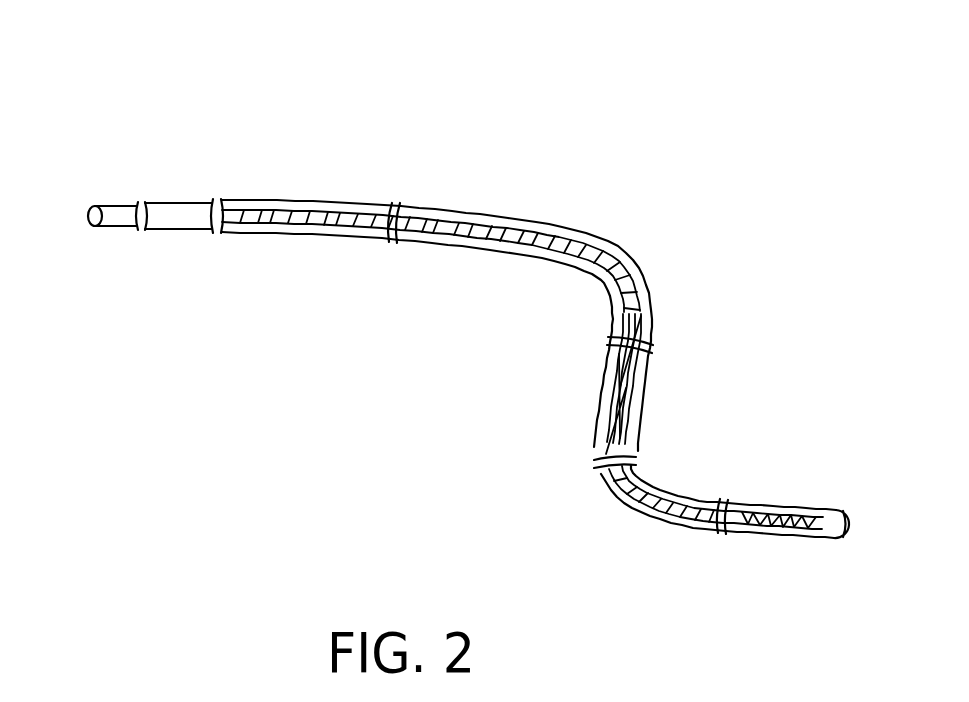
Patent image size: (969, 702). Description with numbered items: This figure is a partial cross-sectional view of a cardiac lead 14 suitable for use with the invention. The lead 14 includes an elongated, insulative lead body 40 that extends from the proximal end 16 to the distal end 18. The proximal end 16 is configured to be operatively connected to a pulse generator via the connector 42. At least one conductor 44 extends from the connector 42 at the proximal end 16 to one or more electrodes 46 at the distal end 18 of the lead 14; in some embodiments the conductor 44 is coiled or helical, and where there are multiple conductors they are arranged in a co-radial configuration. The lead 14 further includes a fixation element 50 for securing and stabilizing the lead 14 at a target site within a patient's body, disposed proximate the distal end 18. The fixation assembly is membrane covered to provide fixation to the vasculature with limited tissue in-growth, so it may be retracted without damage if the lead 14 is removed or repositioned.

The lead 14 is at (118, 110).
The proximal end 16 is at (306, 199).
The distal end 18 is at (810, 505).
The lead body 40 is at (493, 212).
The connector 42 is at (178, 203).
The conductor 44 is at (600, 246).
The electrodes 46 is at (852, 528).
The fixation element 50 is at (808, 501).